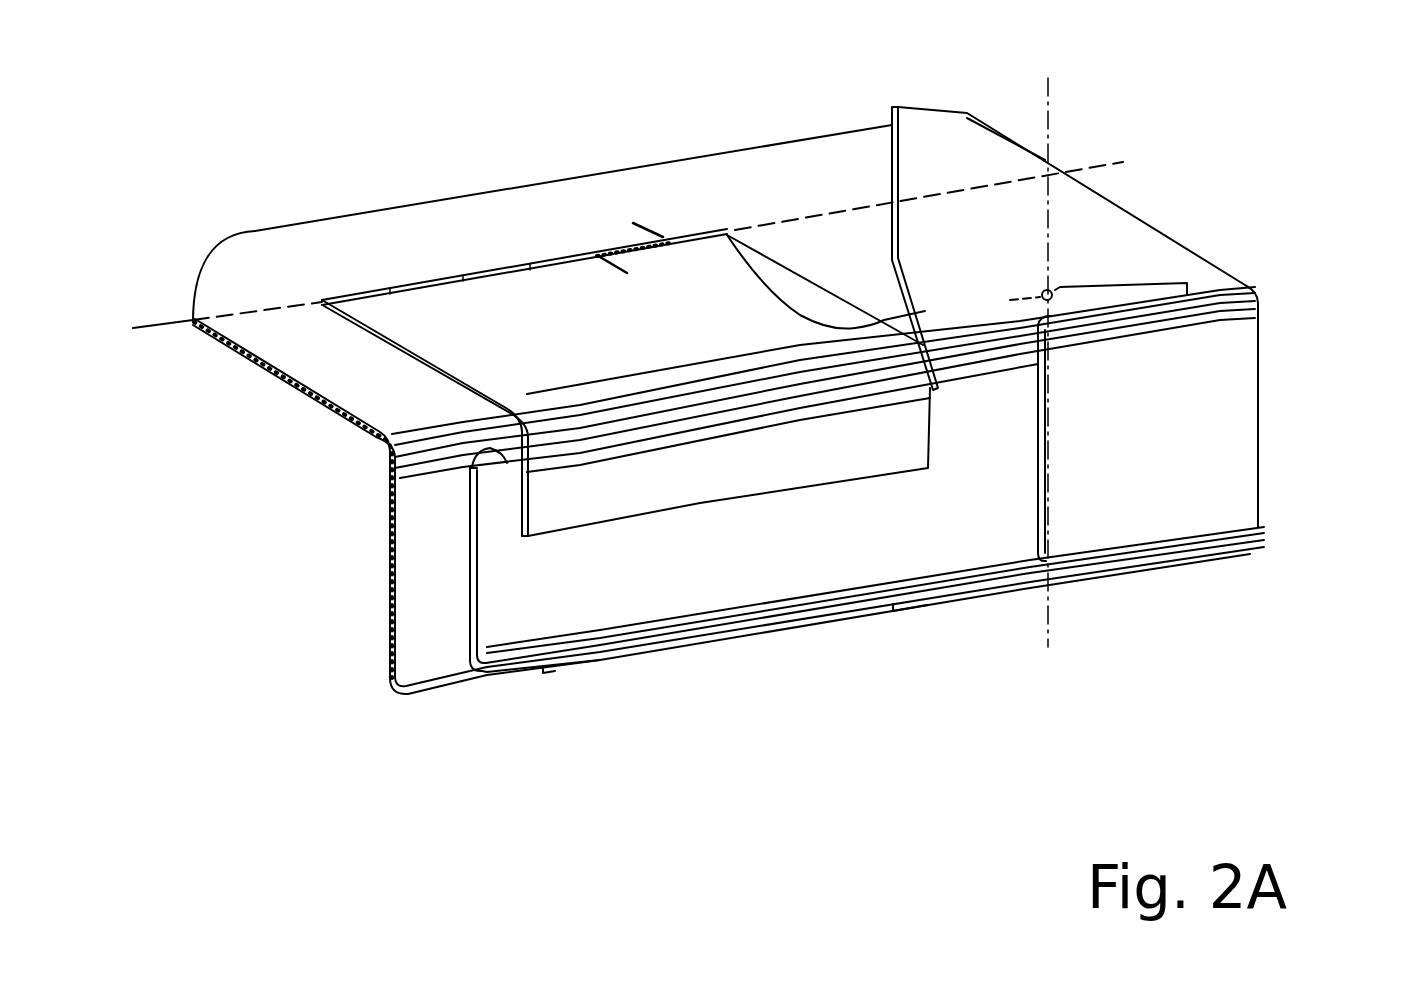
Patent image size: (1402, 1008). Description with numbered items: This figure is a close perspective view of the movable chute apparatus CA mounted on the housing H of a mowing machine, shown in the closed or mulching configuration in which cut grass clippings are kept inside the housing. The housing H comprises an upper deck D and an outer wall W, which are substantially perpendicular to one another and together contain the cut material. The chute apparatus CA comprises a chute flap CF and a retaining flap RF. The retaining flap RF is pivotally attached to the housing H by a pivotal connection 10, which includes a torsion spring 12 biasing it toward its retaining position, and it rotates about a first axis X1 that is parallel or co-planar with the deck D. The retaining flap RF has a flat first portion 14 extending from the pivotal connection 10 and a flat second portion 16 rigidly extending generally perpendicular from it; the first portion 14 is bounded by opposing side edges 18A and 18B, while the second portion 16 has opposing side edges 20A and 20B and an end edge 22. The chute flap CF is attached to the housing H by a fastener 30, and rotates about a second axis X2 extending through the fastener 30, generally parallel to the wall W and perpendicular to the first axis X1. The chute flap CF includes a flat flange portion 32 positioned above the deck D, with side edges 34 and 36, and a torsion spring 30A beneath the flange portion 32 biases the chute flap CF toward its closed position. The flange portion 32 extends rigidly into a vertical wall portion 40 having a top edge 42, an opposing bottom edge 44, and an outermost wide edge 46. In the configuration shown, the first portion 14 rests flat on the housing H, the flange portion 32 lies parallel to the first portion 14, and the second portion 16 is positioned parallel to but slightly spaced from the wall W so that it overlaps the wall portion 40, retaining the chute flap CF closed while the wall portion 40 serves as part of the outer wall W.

The pivotal connection 10 is at (322, 302).
The torsion spring 12 is at (623, 252).
The first portion 14 is at (647, 355).
The second portion 16 is at (860, 448).
The side edge 18A is at (777, 263).
The side edge 18B is at (380, 340).
The side edge 20A is at (928, 430).
The side edge 20B is at (490, 493).
The end edge 22 is at (785, 495).
The fastener 30 is at (1050, 293).
The torsion spring 30A is at (1258, 317).
The flange portion 32 is at (950, 170).
The side edge 34 is at (893, 170).
The side edge 36 is at (727, 233).
The wall portion 40 is at (988, 518).
The top edge 42 is at (477, 457).
The bottom edge 44 is at (847, 610).
The outermost wide edge 46 is at (470, 612).
The upper deck D is at (388, 247).
The housing H is at (263, 372).
The retaining flap RF is at (393, 478).
The chute flap CF is at (1047, 447).
The outer wall W is at (1155, 445).
The chute apparatus CA is at (1180, 178).
The first axis X1 is at (193, 320).
The second axis X2 is at (1050, 115).